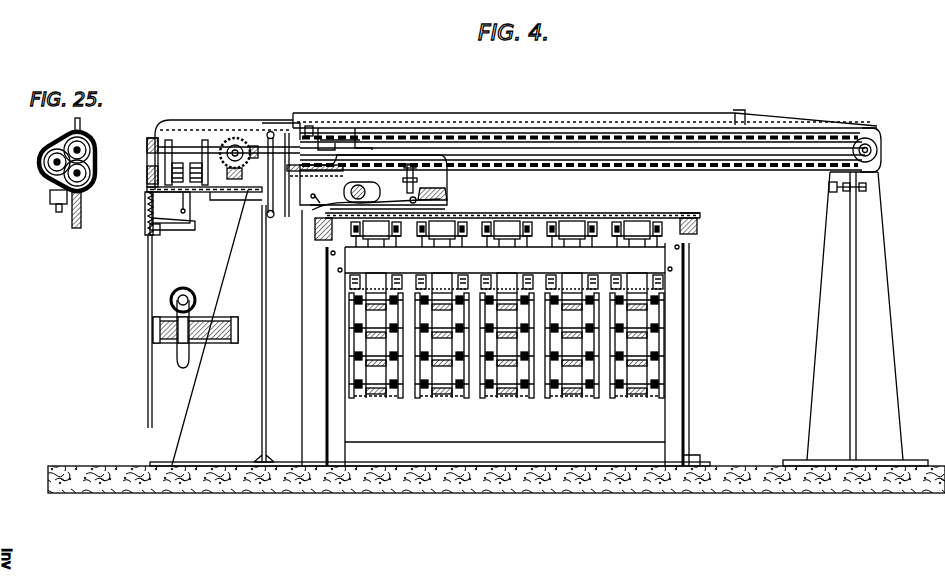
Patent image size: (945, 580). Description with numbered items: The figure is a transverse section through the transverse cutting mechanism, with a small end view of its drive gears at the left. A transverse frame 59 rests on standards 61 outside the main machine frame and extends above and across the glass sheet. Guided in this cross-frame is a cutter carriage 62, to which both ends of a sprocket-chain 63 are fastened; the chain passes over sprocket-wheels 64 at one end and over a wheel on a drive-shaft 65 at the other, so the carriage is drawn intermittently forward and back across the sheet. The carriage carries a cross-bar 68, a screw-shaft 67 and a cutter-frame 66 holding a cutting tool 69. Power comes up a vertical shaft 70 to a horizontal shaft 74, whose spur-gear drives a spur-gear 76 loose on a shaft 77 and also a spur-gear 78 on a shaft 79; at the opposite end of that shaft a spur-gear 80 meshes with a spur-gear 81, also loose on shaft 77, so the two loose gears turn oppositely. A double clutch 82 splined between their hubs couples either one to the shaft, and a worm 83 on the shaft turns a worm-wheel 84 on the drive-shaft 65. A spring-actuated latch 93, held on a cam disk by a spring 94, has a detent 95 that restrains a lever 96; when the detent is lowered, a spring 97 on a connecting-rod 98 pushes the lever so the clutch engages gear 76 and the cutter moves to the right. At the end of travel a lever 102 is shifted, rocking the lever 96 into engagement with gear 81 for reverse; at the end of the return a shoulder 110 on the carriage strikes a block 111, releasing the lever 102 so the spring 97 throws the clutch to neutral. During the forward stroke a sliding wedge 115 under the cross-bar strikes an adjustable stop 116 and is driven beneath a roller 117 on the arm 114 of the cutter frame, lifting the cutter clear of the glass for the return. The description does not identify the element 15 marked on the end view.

In FIG. 25, the roller unit 15 is at (62, 143).
In FIG. 25, the horizontal shaft 74 is at (45, 172).
In FIG. 25, the vertical shaft 70 is at (58, 212).
In FIG. 4, the transverse frame 59 is at (660, 114).
In FIG. 4, the standards 61 is at (886, 286).
In FIG. 4, the cutter carriage 62 is at (367, 180).
In FIG. 4, the sprocket-chain 63 is at (698, 168).
In FIG. 4, the sprocket-wheels 64 is at (884, 147).
In FIG. 4, the drive-shaft 65 is at (265, 130).
In FIG. 4, the cutter-frame 66 is at (341, 202).
In FIG. 4, the screw-shaft 67 is at (367, 192).
In FIG. 4, the cross-bar 68 is at (420, 185).
In FIG. 4, the cutting tool 69 is at (315, 196).
In FIG. 4, the spur-gear 76 is at (148, 160).
In FIG. 4, the shaft 77 is at (148, 178).
In FIG. 4, the spur-gear 78 is at (170, 142).
In FIG. 4, the shaft 79 is at (186, 146).
In FIG. 4, the spur-gear 80 is at (236, 140).
In FIG. 4, the spur-gear 81 is at (209, 201).
In FIG. 4, the double clutch 82 is at (204, 193).
In FIG. 4, the worm 83 is at (247, 195).
In FIG. 4, the worm-wheel 84 is at (263, 154).
In FIG. 4, the spring-actuated latch 93 is at (160, 228).
In FIG. 4, the spring 94 is at (146, 214).
In FIG. 4, the detent 95 is at (194, 226).
In FIG. 4, the lever 96 is at (185, 198).
In FIG. 4, the spring 97 is at (228, 188).
In FIG. 4, the connecting-rod 98 is at (270, 193).
In FIG. 4, the lever 102 is at (312, 126).
In FIG. 4, the shoulder 110 is at (342, 130).
In FIG. 4, the block 111 is at (330, 133).
In FIG. 4, the arm 114 is at (382, 200).
In FIG. 4, the sliding wedge 115 is at (448, 196).
In FIG. 4, the adjustable stop 116 is at (829, 190).
In FIG. 4, the roller 117 is at (418, 200).